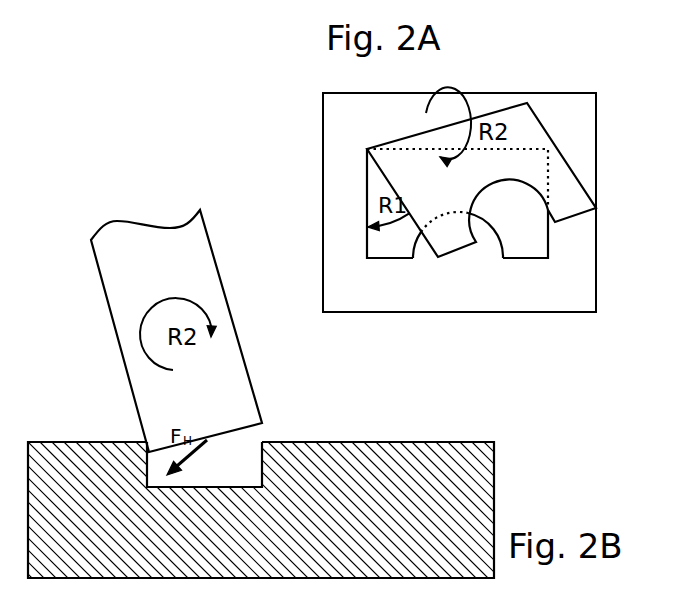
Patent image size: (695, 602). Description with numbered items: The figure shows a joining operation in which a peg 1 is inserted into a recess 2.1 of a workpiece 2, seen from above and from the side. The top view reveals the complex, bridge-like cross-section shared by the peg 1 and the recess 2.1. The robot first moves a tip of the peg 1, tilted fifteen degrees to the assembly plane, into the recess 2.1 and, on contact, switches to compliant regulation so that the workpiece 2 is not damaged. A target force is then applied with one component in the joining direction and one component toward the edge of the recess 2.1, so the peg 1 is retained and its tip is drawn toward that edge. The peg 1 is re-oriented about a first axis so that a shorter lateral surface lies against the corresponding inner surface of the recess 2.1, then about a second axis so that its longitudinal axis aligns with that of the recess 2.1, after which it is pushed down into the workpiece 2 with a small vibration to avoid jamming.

In FIG. 2A, the peg 1 is at (577, 209).
In FIG. 2B, the peg 1 is at (128, 272).
In FIG. 2B, the workpiece 2 is at (92, 554).
In FIG. 2A, the recess 2.1 is at (540, 253).
In FIG. 2B, the recess 2.1 is at (250, 478).